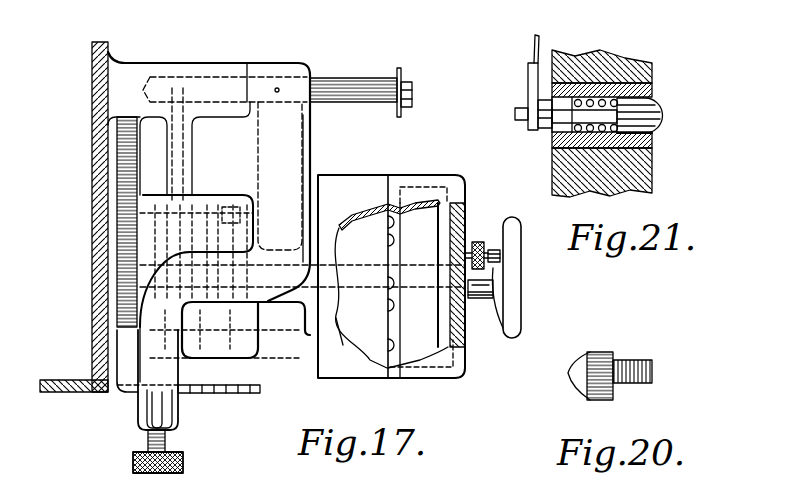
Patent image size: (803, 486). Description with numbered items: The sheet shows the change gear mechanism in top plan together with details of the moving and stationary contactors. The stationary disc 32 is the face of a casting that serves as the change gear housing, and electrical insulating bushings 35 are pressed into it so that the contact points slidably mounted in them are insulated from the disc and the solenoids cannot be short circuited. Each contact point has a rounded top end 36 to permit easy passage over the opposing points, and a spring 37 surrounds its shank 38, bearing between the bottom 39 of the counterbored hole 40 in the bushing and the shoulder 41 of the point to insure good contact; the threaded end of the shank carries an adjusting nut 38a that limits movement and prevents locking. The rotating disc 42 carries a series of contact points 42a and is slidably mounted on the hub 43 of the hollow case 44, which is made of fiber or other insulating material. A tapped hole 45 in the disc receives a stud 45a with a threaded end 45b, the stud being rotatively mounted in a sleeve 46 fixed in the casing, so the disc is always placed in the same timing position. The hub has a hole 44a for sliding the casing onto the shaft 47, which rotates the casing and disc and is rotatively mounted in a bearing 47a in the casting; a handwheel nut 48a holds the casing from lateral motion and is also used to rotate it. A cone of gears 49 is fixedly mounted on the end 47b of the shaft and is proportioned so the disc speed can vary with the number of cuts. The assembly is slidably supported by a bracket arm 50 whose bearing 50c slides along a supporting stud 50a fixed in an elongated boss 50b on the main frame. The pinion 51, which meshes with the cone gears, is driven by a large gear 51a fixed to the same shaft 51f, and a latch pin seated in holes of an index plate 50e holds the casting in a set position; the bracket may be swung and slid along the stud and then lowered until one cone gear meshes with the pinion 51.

In FIG. 17, the stationary disc 32 is at (375, 335).
In FIG. 21, the stationary disc 32 is at (648, 63).
In FIG. 21, the electrical insulating bushings 35 is at (647, 87).
In FIG. 21, the top ends of contact points 36 is at (655, 117).
In FIG. 21, the spring 37 is at (595, 100).
In FIG. 21, the shank 38 is at (568, 115).
In FIG. 21, the adjusting nut 38a is at (547, 132).
In FIG. 21, the bottom of counterbored hole 39 is at (583, 140).
In FIG. 21, the counterbored hole 40 is at (550, 70).
In FIG. 21, the shoulder of contact point 41 is at (648, 132).
In FIG. 17, the rotating disc 42 is at (433, 314).
In FIG. 20, the contact points 42a is at (605, 352).
In FIG. 17, the hub 43 is at (390, 258).
In FIG. 17, the hollow case 44 is at (460, 207).
In FIG. 17, the hole 44a is at (423, 295).
In FIG. 17, the tapped hole 45 is at (412, 260).
In FIG. 17, the stud 45a is at (500, 258).
In FIG. 17, the threaded end 45b is at (420, 277).
In FIG. 17, the sleeve 46 is at (484, 268).
In FIG. 17, the shaft 47 is at (302, 335).
In FIG. 17, the bearing 47a is at (300, 312).
In FIG. 17, the end of shaft 47b is at (125, 360).
In FIG. 17, the handwheel nut 48a is at (521, 327).
In FIG. 17, the cone of gears 49 is at (222, 352).
In FIG. 17, the bracket arm 50 is at (292, 163).
In FIG. 17, the supporting stud 50a is at (335, 87).
In FIG. 17, the elongated boss 50b is at (200, 65).
In FIG. 17, the bearing 50c is at (278, 72).
In FIG. 17, the index plate 50e is at (235, 395).
In FIG. 17, the pinion 51 is at (240, 217).
In FIG. 17, the large gear 51a is at (123, 205).
In FIG. 17, the shaft 51f is at (203, 190).